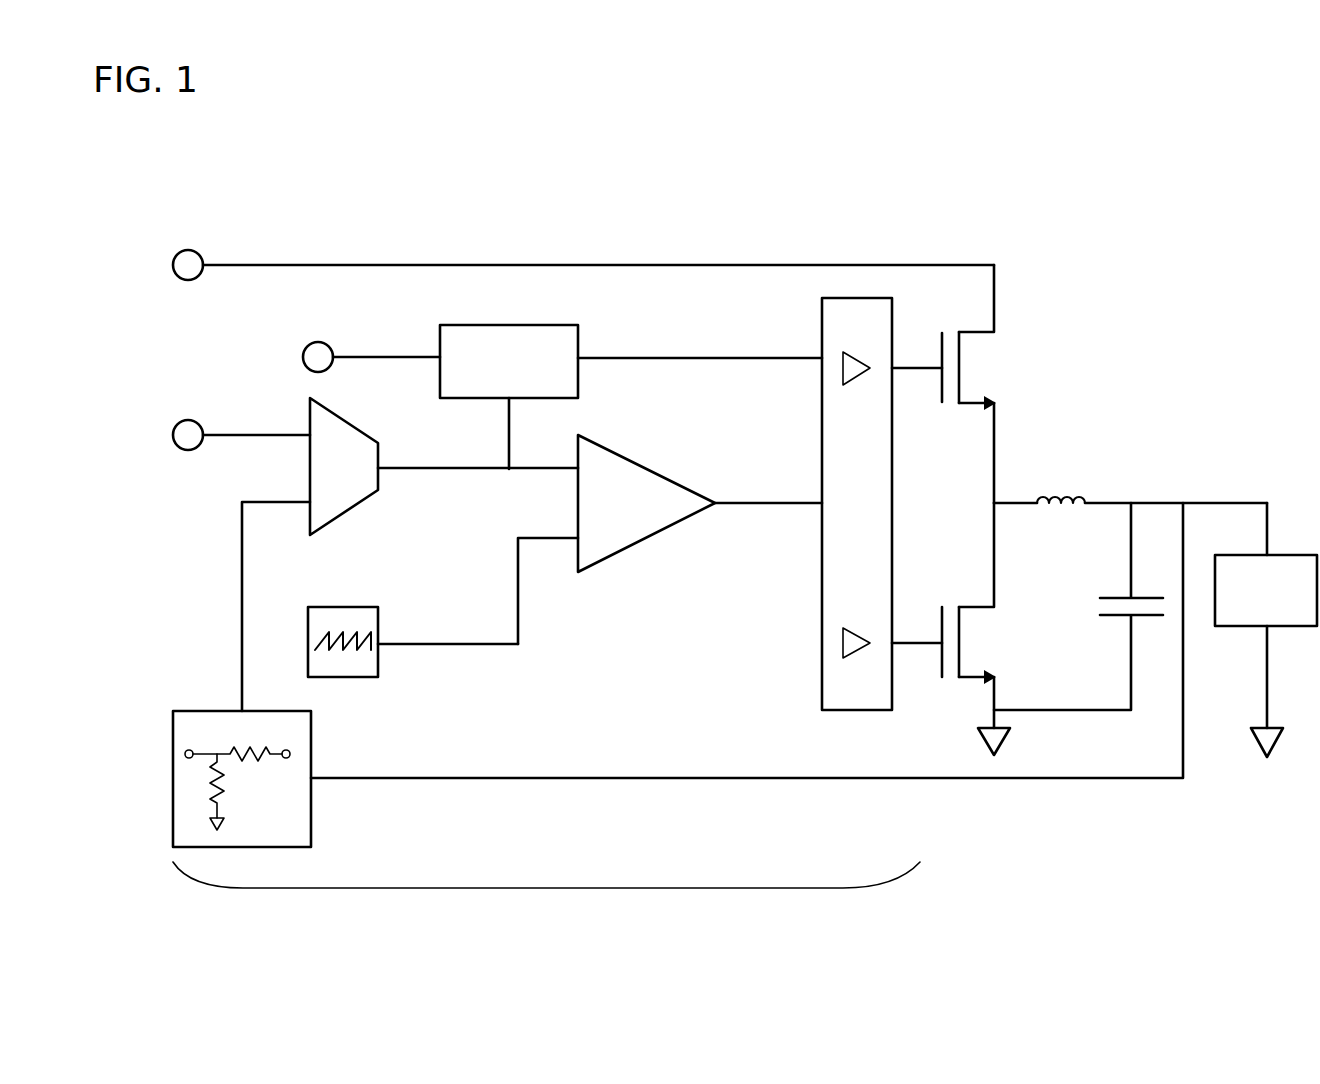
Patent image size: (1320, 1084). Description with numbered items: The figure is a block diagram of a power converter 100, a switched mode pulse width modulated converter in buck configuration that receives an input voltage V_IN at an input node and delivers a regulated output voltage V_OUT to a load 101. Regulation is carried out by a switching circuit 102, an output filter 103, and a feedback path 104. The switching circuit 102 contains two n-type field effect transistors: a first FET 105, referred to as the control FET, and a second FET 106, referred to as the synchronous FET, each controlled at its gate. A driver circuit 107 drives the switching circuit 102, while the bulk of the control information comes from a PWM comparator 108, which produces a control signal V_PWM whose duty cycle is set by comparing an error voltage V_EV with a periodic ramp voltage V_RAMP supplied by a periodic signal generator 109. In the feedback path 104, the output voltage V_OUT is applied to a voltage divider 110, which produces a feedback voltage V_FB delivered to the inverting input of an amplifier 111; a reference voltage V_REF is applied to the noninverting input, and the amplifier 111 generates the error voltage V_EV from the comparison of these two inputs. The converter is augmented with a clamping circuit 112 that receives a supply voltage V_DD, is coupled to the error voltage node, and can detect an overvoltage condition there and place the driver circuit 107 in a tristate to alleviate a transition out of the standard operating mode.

The power converter 100 is at (156, 196).
The load 101 is at (1292, 602).
The switching circuit 102 is at (985, 235).
The output filter 103 is at (1123, 443).
The feedback path 104 is at (547, 888).
The first FET 105 is at (978, 368).
The second FET 106 is at (992, 643).
The driver circuit 107 is at (884, 519).
The PWM comparator 108 is at (666, 521).
The periodic signal generator 109 is at (417, 583).
The voltage divider 110 is at (300, 834).
The amplifier 111 is at (366, 484).
The clamping circuit 112 is at (534, 371).